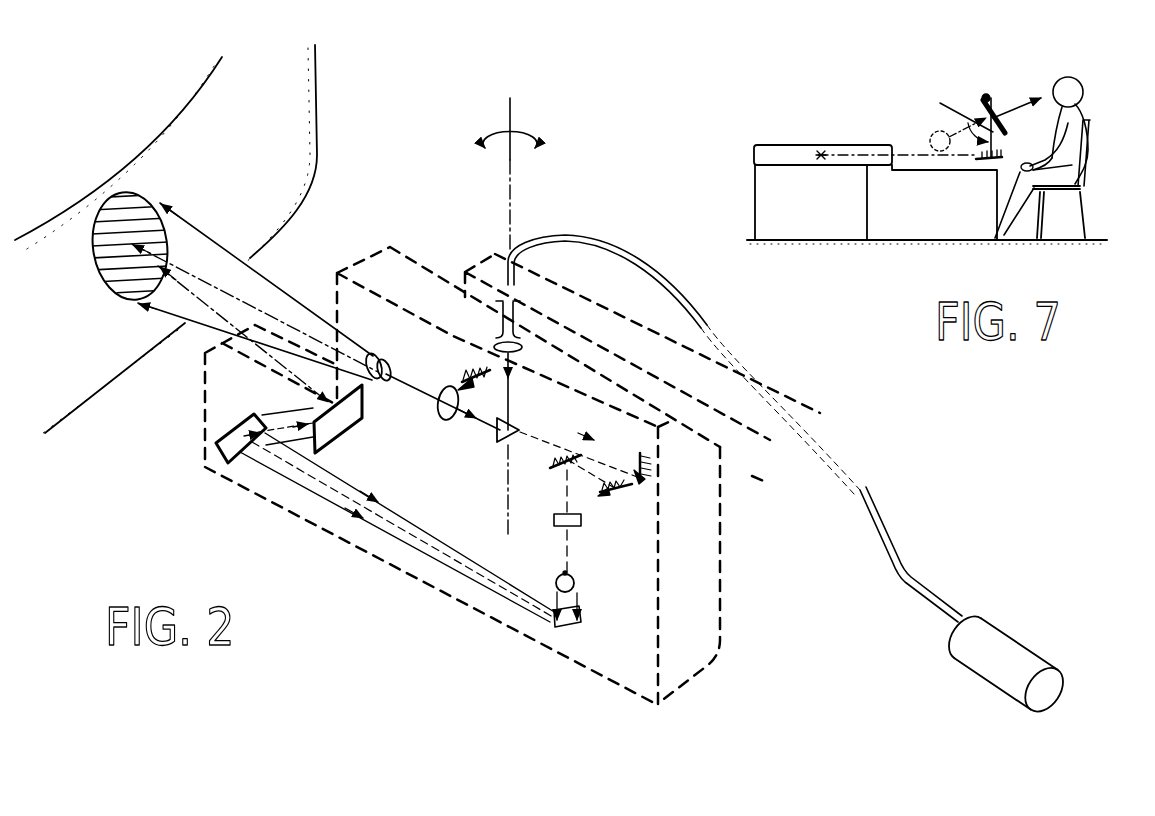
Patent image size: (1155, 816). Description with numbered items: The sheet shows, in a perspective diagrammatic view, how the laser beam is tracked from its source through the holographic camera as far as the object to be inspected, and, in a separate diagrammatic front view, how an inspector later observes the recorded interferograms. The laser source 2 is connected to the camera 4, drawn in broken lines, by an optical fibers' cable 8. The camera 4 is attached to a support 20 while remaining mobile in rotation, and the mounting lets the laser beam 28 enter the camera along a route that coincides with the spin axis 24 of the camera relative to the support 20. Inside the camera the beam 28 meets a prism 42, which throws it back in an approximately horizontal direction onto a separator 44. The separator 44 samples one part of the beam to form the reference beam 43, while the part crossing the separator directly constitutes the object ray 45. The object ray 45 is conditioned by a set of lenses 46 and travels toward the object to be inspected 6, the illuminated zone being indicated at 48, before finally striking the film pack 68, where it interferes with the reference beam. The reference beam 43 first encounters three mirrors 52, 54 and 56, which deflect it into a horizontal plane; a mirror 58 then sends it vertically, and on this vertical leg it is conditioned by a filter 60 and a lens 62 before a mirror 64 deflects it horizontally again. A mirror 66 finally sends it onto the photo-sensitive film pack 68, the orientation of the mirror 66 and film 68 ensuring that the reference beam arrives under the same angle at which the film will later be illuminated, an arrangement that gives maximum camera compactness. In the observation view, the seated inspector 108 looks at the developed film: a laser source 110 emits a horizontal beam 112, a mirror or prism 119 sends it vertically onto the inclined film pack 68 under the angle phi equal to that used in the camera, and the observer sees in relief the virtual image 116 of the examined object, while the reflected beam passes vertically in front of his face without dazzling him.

In FIG. 2, the laser source 2 is at (994, 638).
In FIG. 2, the camera 4 is at (456, 603).
In FIG. 2, the windshield 6 is at (322, 82).
In FIG. 2, the optical fibers' cable 8 is at (898, 578).
In FIG. 2, the support 20 is at (752, 477).
In FIG. 2, the spin axis 24 is at (515, 110).
In FIG. 2, the laser beam 28 is at (495, 350).
In FIG. 2, the prism 42 is at (500, 447).
In FIG. 2, the reference beam 43 is at (530, 403).
In FIG. 2, the separator 44 is at (448, 420).
In FIG. 2, the object ray 45 is at (410, 398).
In FIG. 2, the set of lenses 46 is at (370, 355).
In FIG. 2, the illuminated spot on windshield 48 is at (107, 288).
In FIG. 2, the mirror 52 is at (480, 372).
In FIG. 2, the mirror 54 is at (700, 477).
In FIG. 2, the mirror 56 is at (633, 490).
In FIG. 2, the mirror 58 is at (556, 478).
In FIG. 2, the filter 60 is at (582, 523).
In FIG. 2, the lens 62 is at (577, 587).
In FIG. 2, the mirror 64 is at (567, 630).
In FIG. 2, the mirror 66 is at (216, 445).
In FIG. 2, the film pack 68 is at (328, 448).
In FIG. 7, the film pack 68 is at (996, 110).
In FIG. 7, the inspector 108 is at (1091, 109).
In FIG. 7, the laser source 110 is at (813, 146).
In FIG. 7, the horizontal beam 112 is at (927, 162).
In FIG. 7, the virtual image 116 is at (932, 137).
In FIG. 7, the mirror or prism 119 is at (981, 164).